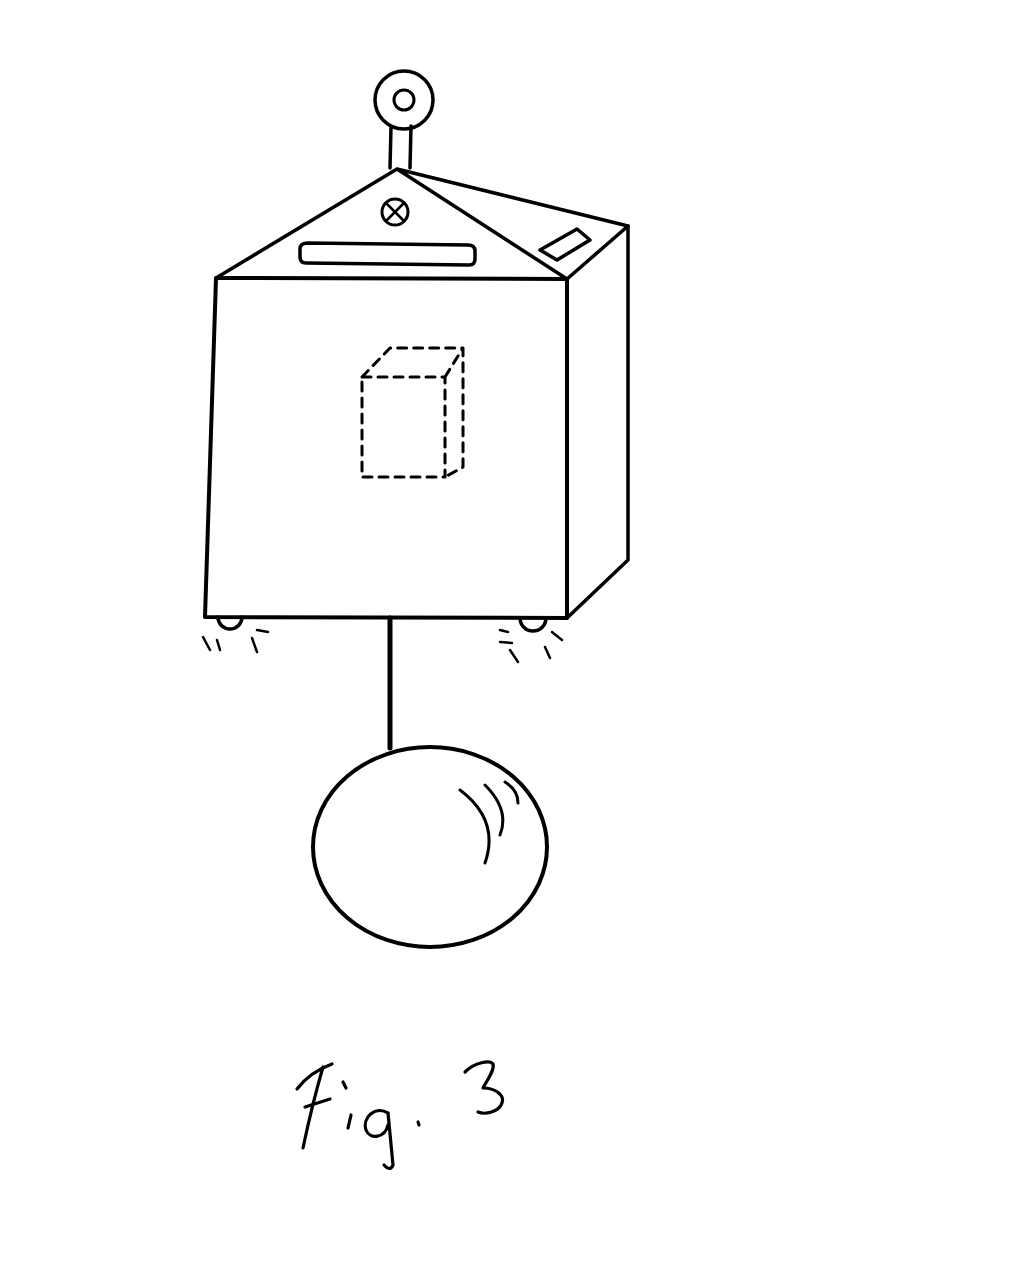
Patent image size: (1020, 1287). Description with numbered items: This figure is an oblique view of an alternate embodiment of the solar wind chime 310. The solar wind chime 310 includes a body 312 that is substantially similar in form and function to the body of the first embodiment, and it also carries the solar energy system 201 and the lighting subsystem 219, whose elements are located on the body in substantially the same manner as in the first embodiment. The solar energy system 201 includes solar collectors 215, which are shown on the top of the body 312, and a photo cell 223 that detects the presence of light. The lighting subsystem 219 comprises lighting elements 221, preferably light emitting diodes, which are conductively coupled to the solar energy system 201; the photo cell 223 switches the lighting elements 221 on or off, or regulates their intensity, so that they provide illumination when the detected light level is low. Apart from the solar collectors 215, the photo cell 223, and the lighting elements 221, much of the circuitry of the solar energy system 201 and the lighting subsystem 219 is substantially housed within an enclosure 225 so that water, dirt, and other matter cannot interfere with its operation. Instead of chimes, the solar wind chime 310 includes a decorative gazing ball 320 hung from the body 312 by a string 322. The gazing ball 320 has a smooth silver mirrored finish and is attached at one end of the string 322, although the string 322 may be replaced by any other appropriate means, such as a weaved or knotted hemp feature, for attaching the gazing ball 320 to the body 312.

The solar wind chime 310 is at (752, 134).
The body 312 is at (637, 349).
The solar collector 215 is at (327, 247).
The photo cell 223 is at (410, 203).
The solar energy system 201 is at (357, 461).
The enclosure 225 is at (395, 428).
The lighting elements 221 is at (235, 638).
The lighting subsystem 219 is at (213, 630).
The string 322 is at (388, 678).
The gazing ball 320 is at (547, 842).